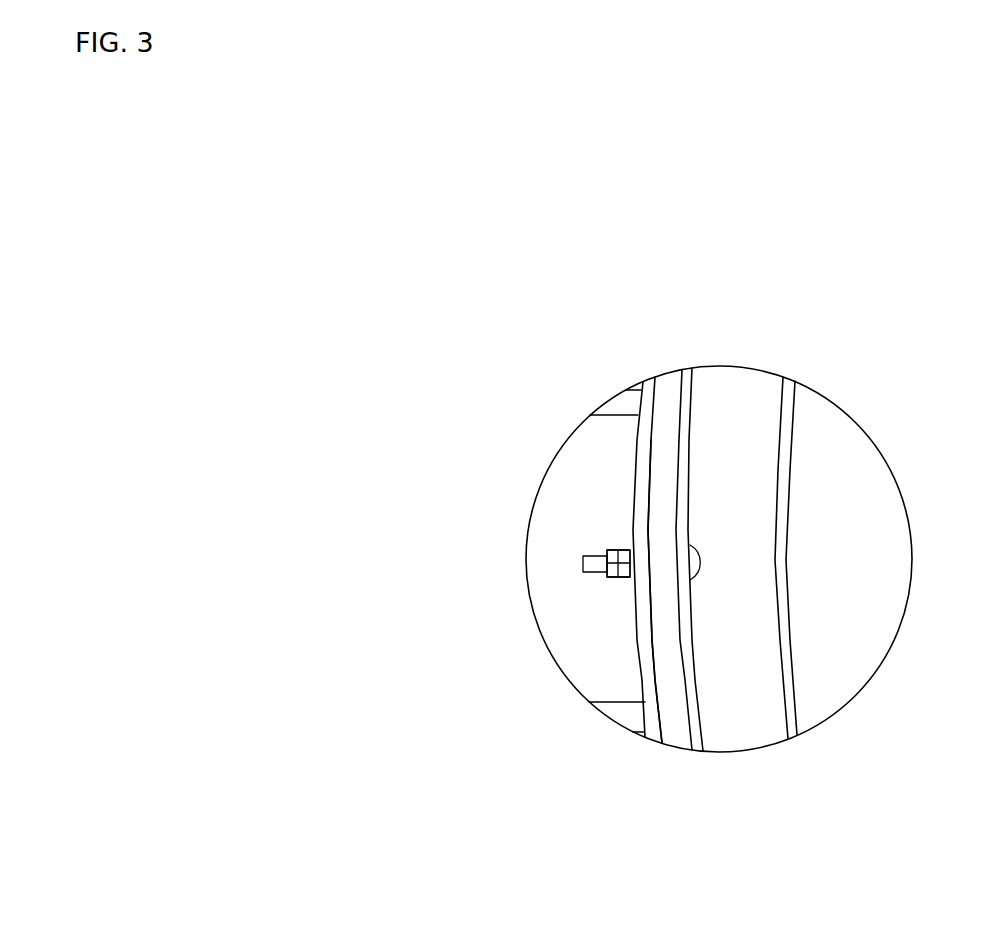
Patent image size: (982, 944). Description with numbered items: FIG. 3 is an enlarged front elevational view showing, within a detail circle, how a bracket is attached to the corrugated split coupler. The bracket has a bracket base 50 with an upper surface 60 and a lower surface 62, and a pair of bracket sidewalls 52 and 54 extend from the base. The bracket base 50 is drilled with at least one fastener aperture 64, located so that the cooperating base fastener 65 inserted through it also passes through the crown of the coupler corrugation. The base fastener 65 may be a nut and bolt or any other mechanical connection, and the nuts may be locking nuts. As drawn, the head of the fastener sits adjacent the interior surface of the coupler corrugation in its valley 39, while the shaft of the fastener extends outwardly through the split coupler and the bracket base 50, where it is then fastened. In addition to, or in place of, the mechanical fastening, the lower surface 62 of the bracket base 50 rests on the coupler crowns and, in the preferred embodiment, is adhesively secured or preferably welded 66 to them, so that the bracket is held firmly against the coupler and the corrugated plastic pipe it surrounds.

The valley 39 is at (865, 607).
The bracket base 50 is at (708, 467).
The bracket sidewall 52 is at (570, 783).
The bracket sidewall 54 is at (580, 303).
The upper surface 60 is at (564, 560).
The lower surface 62 is at (737, 603).
The fastener aperture 64 is at (517, 602).
The base fastener 65 is at (682, 431).
The weld 66 is at (766, 575).